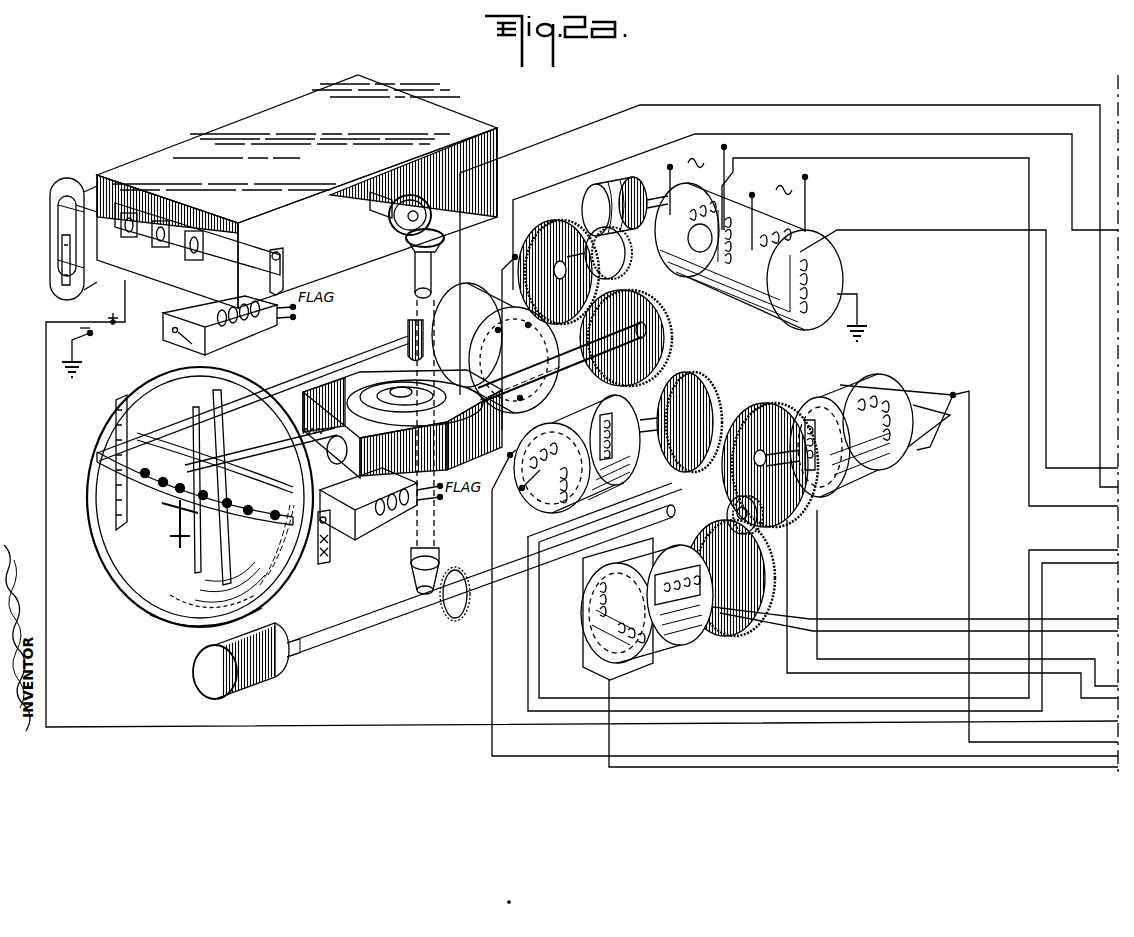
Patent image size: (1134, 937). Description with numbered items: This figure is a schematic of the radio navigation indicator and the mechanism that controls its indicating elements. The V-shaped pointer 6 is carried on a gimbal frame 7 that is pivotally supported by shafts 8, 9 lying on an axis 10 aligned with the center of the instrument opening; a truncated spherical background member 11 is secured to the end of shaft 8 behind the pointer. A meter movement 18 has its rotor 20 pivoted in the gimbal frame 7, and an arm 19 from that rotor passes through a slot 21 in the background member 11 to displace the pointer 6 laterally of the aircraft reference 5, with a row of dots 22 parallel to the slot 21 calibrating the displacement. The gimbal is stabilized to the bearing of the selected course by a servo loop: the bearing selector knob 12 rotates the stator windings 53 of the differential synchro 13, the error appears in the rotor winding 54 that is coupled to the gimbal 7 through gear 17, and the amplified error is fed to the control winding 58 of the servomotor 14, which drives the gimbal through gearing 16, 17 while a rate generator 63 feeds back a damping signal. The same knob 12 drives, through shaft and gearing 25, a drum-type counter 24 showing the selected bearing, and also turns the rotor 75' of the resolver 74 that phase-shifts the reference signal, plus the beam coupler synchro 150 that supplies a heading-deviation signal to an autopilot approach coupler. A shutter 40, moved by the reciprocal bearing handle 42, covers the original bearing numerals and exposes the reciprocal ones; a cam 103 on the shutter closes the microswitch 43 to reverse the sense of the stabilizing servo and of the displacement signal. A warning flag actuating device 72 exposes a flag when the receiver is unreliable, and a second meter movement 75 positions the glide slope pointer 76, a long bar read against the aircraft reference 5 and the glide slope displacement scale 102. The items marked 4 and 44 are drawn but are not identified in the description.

The dial drum 4 is at (90, 508).
The aircraft reference 5 is at (163, 535).
The V-shaped pointer 6 is at (186, 558).
The gimbal frame 7 is at (308, 385).
The shaft 8 is at (298, 438).
The shaft 9 is at (600, 342).
The axis 10 is at (713, 308).
The background member 11 is at (196, 604).
The bearing selector knob 12 is at (200, 668).
The differential synchro 13 is at (492, 492).
The servomotor 14 is at (690, 270).
The gearing 16 is at (547, 233).
The gear 17 is at (628, 310).
The meter movement 18 is at (340, 395).
The arm 19 is at (365, 388).
The rotor 20 is at (380, 386).
The slot 21 is at (160, 428).
The dots 22 is at (166, 477).
The counter 24 is at (260, 120).
The shaft and gearing 25 is at (411, 576).
The shutter 40 is at (194, 262).
The shutter-operating knob 42 is at (278, 252).
The microswitch 43 is at (62, 245).
The bevel gear pair 44 is at (395, 244).
The stator windings 53 is at (523, 492).
The rotor winding 54 is at (660, 400).
The control winding 58 is at (734, 294).
The rate generator 63 is at (772, 316).
The LOC warning flag actuating device 72 is at (344, 529).
The resolver 74 is at (682, 661).
The meter movement 75 is at (495, 343).
The rotor 75' is at (696, 592).
The glide slope pointer 76 is at (98, 460).
The glide slope displacement scale 102 is at (100, 428).
The cam 103 is at (74, 180).
The beam coupler synchro 150 is at (880, 480).